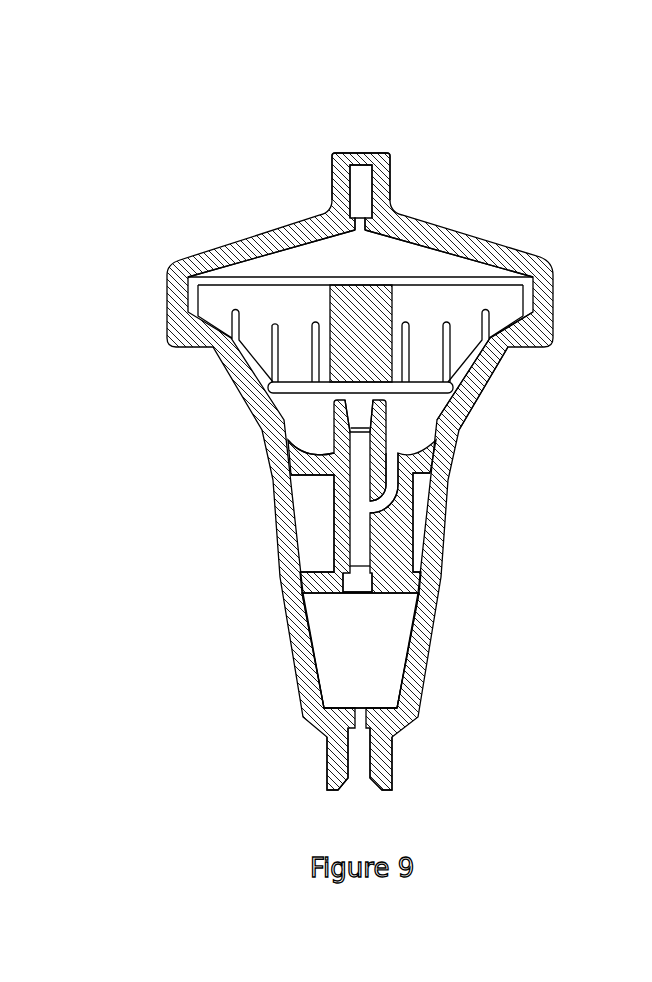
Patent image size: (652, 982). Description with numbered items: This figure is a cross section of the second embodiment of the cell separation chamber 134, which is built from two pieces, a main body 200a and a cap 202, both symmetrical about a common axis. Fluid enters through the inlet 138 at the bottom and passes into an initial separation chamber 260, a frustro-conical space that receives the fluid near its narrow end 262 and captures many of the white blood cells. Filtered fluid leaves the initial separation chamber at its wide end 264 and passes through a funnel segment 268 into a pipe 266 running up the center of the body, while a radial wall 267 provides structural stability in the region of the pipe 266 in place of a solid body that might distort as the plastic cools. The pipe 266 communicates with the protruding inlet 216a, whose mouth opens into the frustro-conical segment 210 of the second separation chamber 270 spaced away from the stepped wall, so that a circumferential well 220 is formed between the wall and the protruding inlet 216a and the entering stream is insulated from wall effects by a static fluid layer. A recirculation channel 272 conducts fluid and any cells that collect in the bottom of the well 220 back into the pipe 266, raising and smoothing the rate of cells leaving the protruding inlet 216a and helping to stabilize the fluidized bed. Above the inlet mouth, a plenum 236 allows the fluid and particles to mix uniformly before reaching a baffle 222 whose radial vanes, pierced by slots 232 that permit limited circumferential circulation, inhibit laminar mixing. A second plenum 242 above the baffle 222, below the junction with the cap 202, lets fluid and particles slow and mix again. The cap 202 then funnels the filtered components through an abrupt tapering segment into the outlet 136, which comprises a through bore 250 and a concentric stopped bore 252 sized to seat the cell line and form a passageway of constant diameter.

The cell separation chamber 134 is at (510, 156).
The main body 200a is at (158, 528).
The cap 202 is at (208, 231).
The outlet 136 is at (391, 158).
The stopped bore 252 is at (365, 193).
The through bore 250 is at (362, 226).
The baffle 222 is at (228, 299).
The second plenum 242 is at (428, 280).
The slots 232 is at (486, 316).
The frustro-conical segment 210 is at (468, 357).
The plenum 236 is at (420, 402).
The protruding inlet 216a is at (358, 410).
The circumferential well 220 is at (407, 443).
The recirculation channel 272 is at (398, 480).
The radial wall 267 is at (333, 533).
The pipe 266 is at (454, 483).
The second separation chamber 270 is at (306, 415).
The initial separation chamber 260 is at (342, 648).
The funnel segment 268 is at (362, 583).
The wide end 264 is at (372, 610).
The narrow end 262 is at (373, 680).
The inlet 138 is at (360, 762).